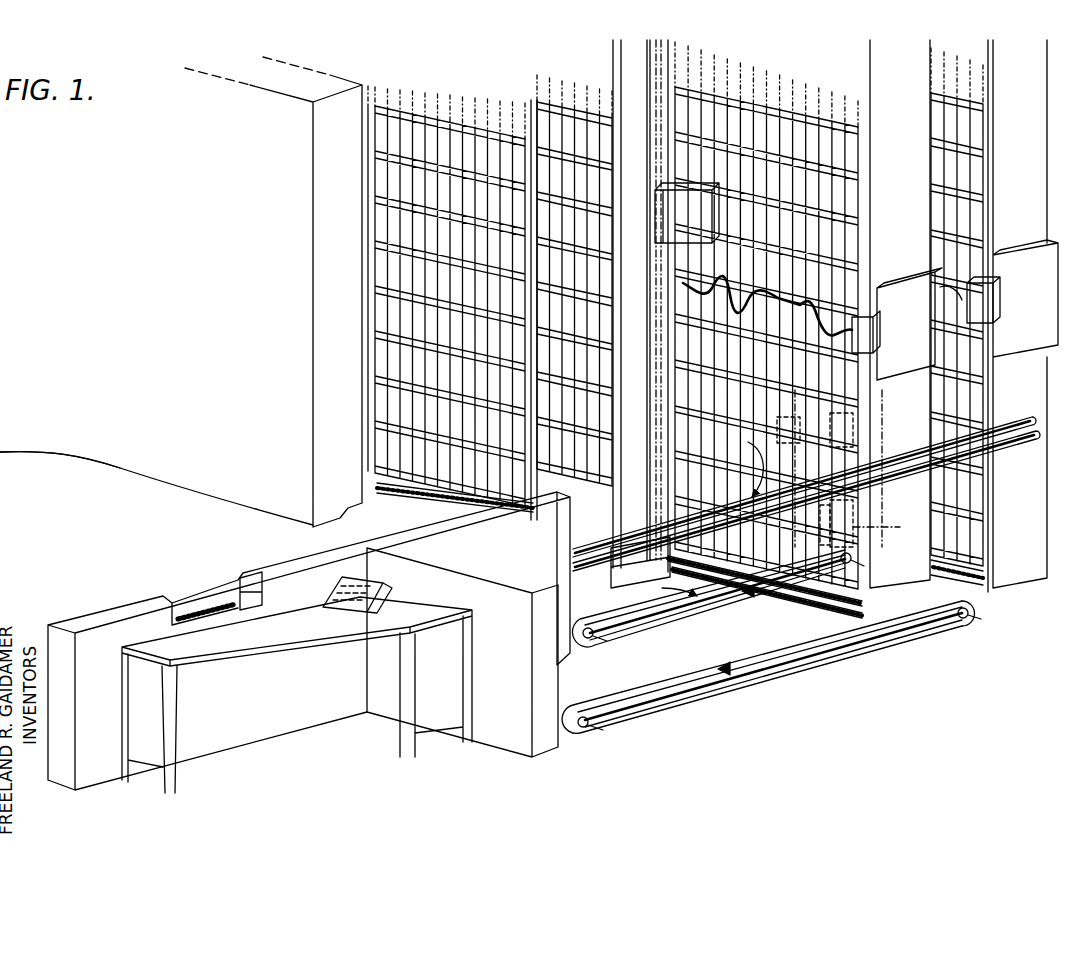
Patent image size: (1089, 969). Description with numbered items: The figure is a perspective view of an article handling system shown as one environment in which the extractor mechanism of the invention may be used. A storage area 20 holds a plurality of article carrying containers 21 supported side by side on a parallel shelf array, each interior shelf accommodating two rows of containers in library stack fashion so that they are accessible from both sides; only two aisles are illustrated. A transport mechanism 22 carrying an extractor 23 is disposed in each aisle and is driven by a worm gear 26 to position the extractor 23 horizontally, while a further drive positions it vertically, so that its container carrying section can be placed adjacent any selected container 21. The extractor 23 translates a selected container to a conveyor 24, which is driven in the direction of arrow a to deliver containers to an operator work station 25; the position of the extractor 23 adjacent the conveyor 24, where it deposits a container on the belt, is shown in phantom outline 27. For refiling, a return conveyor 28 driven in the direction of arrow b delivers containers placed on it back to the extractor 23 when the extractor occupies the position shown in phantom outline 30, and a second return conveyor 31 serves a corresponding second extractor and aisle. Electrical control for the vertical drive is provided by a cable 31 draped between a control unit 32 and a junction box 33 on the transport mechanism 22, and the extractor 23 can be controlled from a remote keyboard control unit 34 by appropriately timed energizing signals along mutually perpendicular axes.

The storage area 20 is at (197, 367).
The article carrying containers 21 is at (382, 356).
The transport mechanism 22 is at (611, 90).
The extractor 23 is at (710, 221).
The conveyor 24 is at (713, 500).
The operator work station 25 is at (168, 593).
The worm gear 26 is at (838, 607).
The phantom outline 27 is at (865, 440).
The return conveyor 28 is at (745, 594).
The phantom outline 30 is at (855, 527).
The second return conveyor 31 is at (705, 702).
The control unit 32 is at (997, 296).
The junction box 33 is at (678, 290).
The keyboard control unit 34 is at (345, 613).